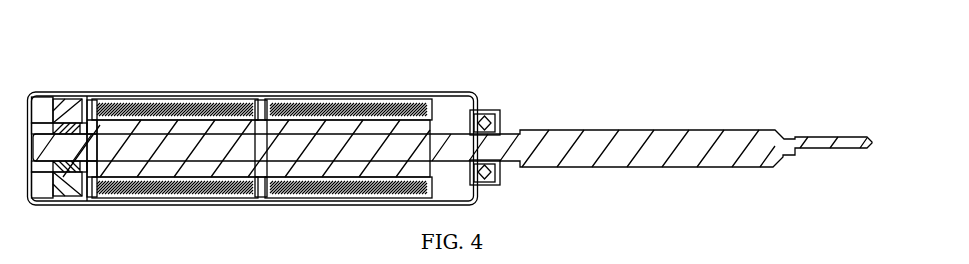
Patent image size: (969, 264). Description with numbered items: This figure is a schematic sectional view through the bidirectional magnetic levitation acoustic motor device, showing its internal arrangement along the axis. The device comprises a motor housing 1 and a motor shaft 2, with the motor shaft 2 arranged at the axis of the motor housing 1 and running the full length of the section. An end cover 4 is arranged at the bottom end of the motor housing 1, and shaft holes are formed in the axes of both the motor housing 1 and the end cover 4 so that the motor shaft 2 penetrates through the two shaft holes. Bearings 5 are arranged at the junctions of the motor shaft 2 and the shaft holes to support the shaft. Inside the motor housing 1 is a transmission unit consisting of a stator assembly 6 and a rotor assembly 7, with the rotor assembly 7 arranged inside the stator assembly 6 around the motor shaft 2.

The motor housing 1 is at (152, 92).
The motor shaft 2 is at (607, 147).
The end cover 4 is at (40, 98).
The bearings 5 is at (87, 112).
The stator assembly 6 is at (198, 97).
The rotor assembly 7 is at (245, 118).